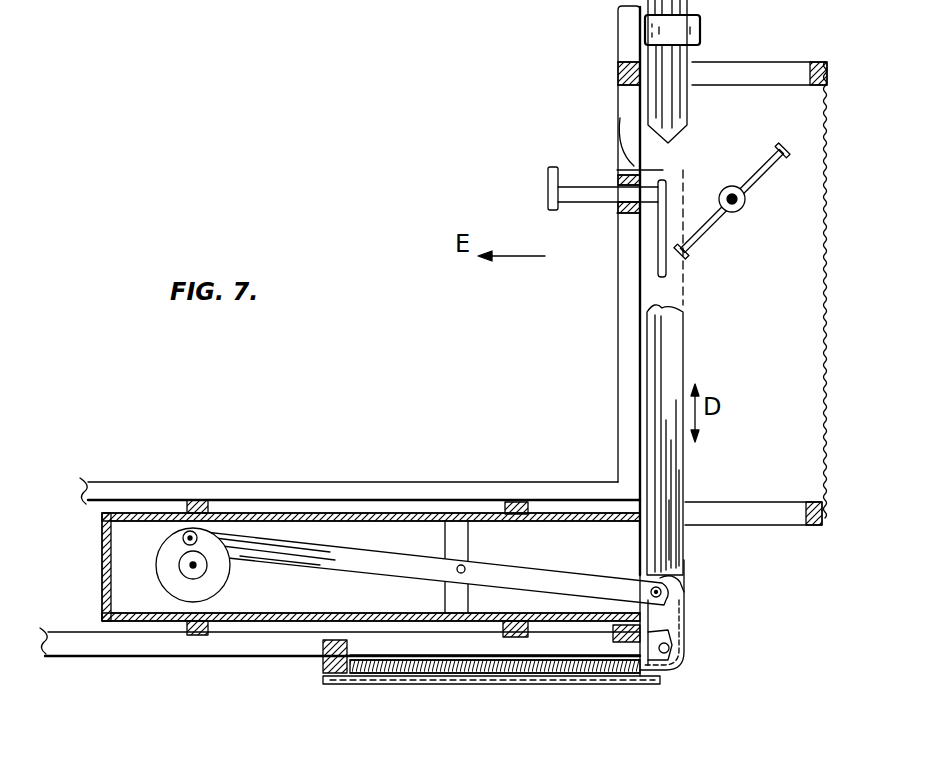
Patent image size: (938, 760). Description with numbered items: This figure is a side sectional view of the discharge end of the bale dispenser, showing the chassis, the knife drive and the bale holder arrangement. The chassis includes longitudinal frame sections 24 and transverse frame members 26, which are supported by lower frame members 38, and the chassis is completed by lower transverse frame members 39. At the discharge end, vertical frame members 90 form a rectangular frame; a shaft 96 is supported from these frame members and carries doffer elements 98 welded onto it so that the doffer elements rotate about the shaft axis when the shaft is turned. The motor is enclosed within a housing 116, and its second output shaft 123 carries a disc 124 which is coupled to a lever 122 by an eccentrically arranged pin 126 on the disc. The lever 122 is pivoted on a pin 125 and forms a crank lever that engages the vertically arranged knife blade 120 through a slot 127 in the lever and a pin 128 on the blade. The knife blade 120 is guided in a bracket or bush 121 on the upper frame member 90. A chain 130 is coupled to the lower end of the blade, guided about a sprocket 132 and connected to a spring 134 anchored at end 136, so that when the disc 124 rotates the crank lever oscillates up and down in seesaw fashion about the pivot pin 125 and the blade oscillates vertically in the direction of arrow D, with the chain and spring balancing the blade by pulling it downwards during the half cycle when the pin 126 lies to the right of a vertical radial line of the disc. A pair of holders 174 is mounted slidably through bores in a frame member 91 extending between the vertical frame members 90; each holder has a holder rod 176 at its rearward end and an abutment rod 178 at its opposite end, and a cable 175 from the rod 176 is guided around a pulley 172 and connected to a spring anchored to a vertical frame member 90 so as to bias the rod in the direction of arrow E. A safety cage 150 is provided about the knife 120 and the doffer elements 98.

The longitudinal frame sections 24 is at (120, 488).
The transverse frame members 26 is at (198, 500).
The lower frame members 38 is at (90, 647).
The lower transverse frame members 39 is at (187, 638).
The frame section 90 is at (628, 33).
The frame member 91 is at (623, 220).
The shaft 96 is at (745, 210).
The doffer elements 98 is at (790, 152).
The housing 116 is at (316, 515).
The knife blade 120 is at (675, 362).
The bracket or bush 121 is at (697, 25).
The lever 122 is at (603, 540).
The second output shaft 123 is at (170, 566).
The disc 124 is at (170, 580).
The pin 125 is at (465, 566).
The eccentrically arranged pin 126 is at (183, 540).
The slot 127 is at (673, 592).
The pin 128 is at (668, 582).
The chain 130 is at (657, 673).
The sprocket 132 is at (670, 645).
The spring 134 is at (418, 665).
The end 136 is at (333, 680).
The safety cage 150 is at (830, 345).
The pulley 172 is at (633, 160).
The holders 174 is at (598, 190).
The cable 175 is at (666, 180).
The holder rod 176 is at (655, 250).
The abutment rod 178 is at (548, 190).